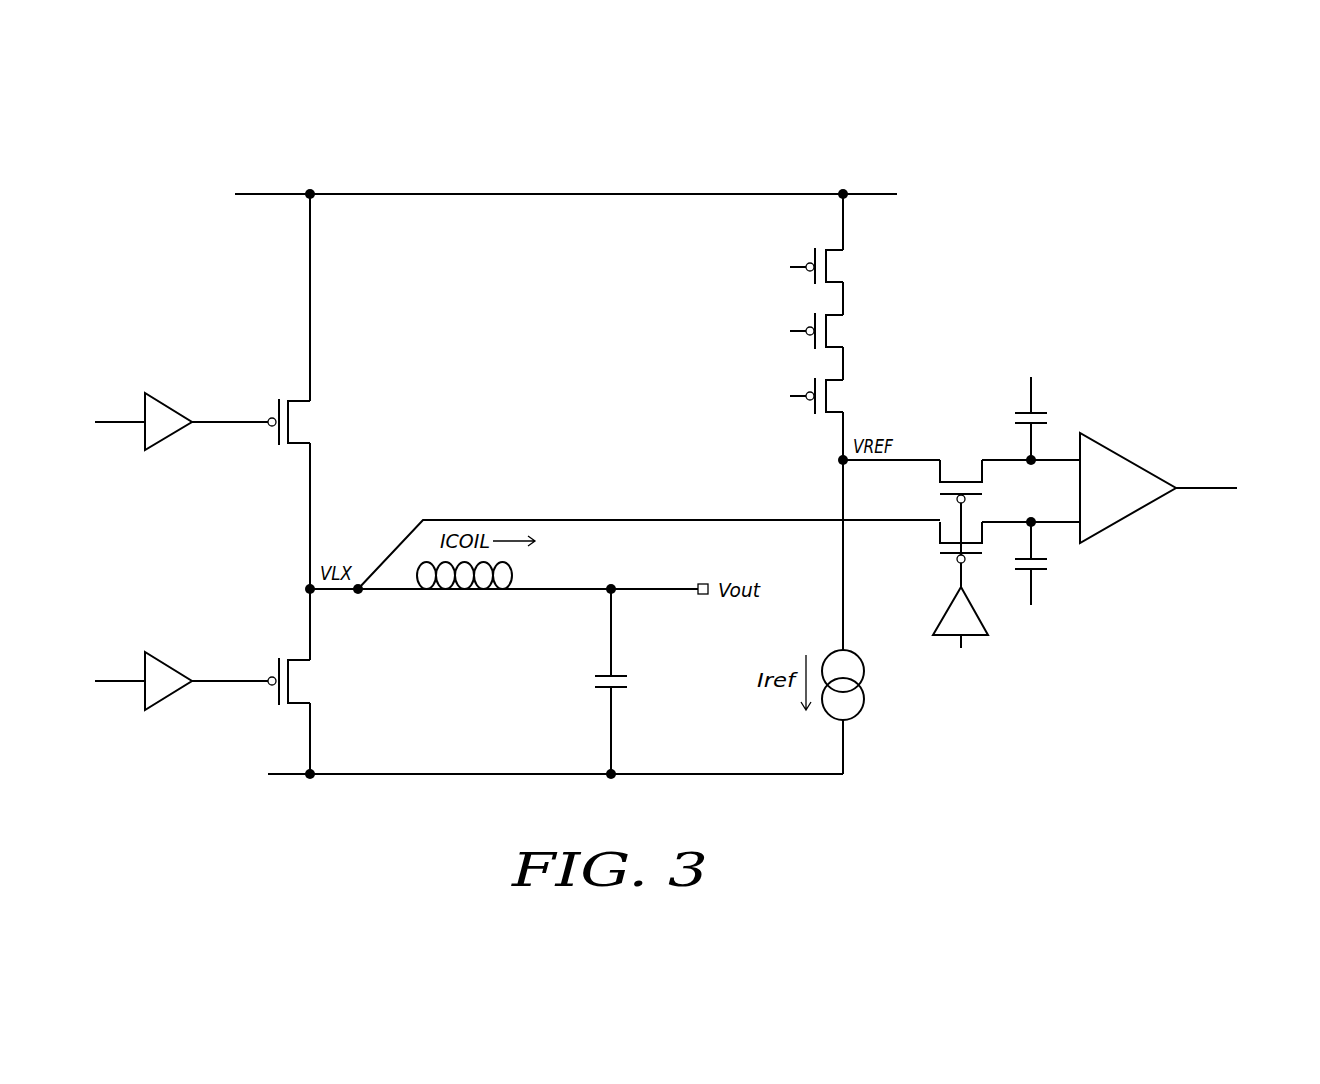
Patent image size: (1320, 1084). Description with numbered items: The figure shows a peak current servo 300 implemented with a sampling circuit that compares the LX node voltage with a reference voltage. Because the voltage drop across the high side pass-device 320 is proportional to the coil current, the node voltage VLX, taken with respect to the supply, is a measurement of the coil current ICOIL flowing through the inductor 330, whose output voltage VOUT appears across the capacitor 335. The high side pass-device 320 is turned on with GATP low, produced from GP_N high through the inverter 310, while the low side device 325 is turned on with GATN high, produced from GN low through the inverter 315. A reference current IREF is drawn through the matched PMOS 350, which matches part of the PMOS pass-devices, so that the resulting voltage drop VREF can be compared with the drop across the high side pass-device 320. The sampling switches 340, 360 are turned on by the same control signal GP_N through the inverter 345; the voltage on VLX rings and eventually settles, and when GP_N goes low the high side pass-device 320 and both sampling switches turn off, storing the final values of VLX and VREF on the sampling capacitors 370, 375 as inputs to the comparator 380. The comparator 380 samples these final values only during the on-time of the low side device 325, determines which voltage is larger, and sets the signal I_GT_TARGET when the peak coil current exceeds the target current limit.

The peak current servo 300 is at (503, 157).
The inverter 310 is at (176, 401).
The inverter 315 is at (176, 660).
The high side pass-device 320 is at (323, 413).
The low side device 325 is at (323, 673).
The inductor 330 is at (461, 597).
The capacitor 335 is at (640, 683).
The sampling switch 340 is at (933, 532).
The inverter 345 is at (945, 607).
The matched PMOS 350 is at (760, 320).
The sampling switch 360 is at (960, 471).
The sampling capacitor 370 is at (1015, 406).
The sampling capacitor 375 is at (1047, 575).
The comparator 380 is at (1115, 447).